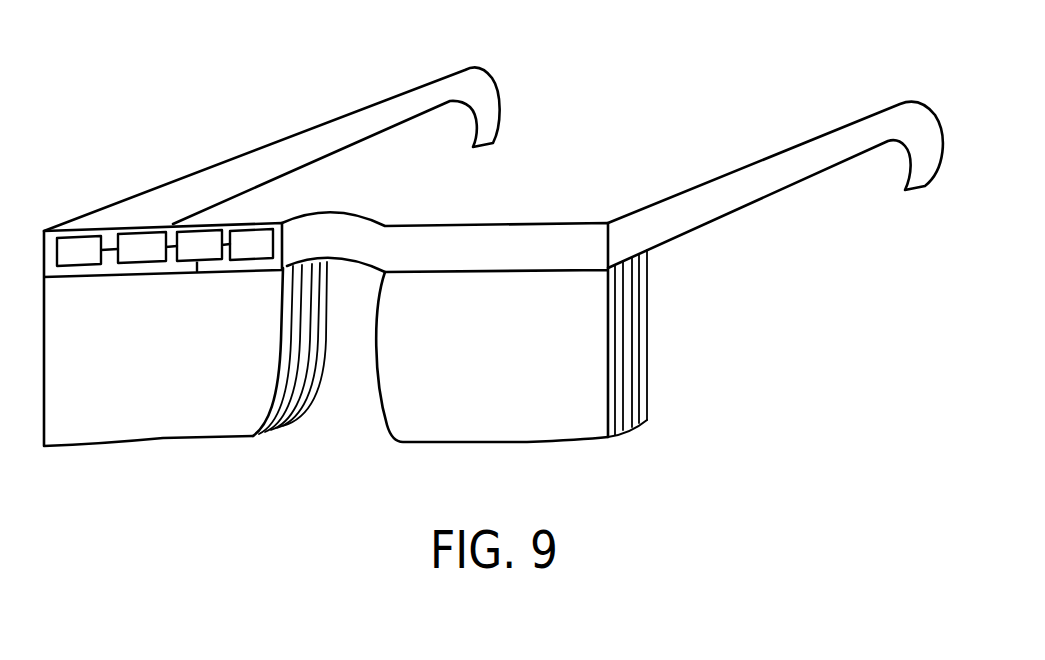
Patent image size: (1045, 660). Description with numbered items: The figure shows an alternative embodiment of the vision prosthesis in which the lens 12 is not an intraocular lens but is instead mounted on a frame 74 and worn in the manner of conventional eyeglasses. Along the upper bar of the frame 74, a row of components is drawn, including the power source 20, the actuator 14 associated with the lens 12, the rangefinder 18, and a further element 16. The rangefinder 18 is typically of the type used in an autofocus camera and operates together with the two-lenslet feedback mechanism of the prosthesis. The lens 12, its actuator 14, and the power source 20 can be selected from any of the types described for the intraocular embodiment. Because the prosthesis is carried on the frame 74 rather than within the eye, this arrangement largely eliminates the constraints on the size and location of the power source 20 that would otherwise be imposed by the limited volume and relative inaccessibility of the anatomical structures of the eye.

The lens 12 is at (192, 358).
The actuator 14 is at (195, 238).
The electronic module 16 is at (137, 243).
The rangefinder 18 is at (250, 243).
The power source 20 is at (70, 247).
The frame 74 is at (703, 200).